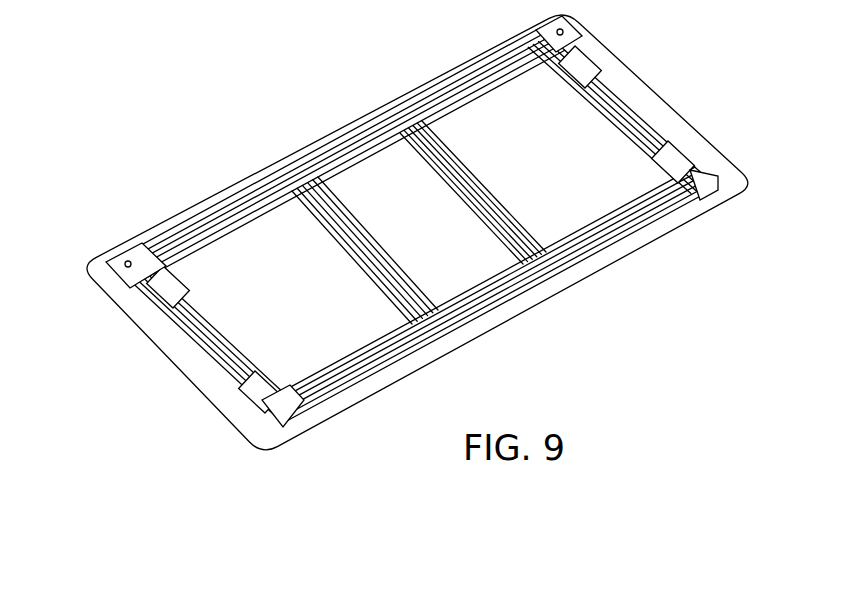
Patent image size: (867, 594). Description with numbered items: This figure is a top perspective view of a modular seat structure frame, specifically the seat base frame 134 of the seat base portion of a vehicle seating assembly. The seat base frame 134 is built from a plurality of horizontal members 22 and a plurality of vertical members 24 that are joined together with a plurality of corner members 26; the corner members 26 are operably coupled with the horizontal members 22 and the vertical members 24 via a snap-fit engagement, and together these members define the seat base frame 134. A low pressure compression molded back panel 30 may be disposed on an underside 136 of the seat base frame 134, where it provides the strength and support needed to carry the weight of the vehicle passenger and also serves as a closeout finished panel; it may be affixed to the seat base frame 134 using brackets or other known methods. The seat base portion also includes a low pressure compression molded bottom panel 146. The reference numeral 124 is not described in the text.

The seat base frame 134 is at (393, 225).
The low pressure compression molded bottom panel 146 is at (623, 78).
The underside 136 is at (400, 365).
The frame member 124 is at (541, 27).
The horizontal members 22 is at (211, 196).
The vertical members 24 is at (197, 345).
The corner members 26 is at (128, 253).
The low pressure compression molded back panel 30 is at (303, 145).